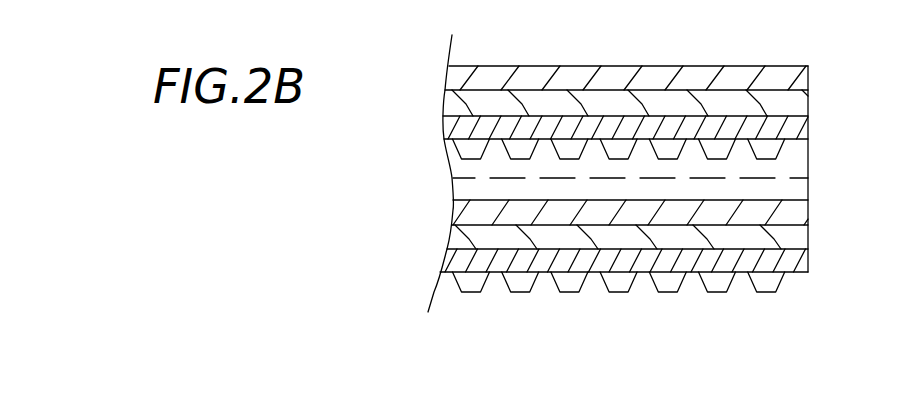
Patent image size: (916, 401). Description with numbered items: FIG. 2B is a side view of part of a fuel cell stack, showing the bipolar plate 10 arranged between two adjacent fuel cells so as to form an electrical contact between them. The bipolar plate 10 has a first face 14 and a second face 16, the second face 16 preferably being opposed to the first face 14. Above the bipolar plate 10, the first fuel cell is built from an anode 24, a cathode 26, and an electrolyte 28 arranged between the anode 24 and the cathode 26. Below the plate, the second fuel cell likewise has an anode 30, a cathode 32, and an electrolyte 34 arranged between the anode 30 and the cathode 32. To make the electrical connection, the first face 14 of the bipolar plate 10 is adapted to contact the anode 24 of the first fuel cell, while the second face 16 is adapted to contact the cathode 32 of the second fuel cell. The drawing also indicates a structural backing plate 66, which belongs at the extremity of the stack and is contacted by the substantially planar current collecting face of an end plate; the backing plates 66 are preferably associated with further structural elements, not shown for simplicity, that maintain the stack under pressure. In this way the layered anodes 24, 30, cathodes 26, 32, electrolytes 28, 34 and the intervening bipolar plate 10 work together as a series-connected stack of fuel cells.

The bipolar plate 10 is at (470, 190).
The first face 14 is at (692, 130).
The second face 16 is at (632, 205).
The anode 24 is at (790, 130).
The cathode 26 is at (760, 74).
The electrolyte 28 is at (450, 108).
The anode 30 is at (790, 263).
The cathode 32 is at (787, 213).
The electrolyte 34 is at (465, 237).
The structural backing plate 66 is at (83, 0).